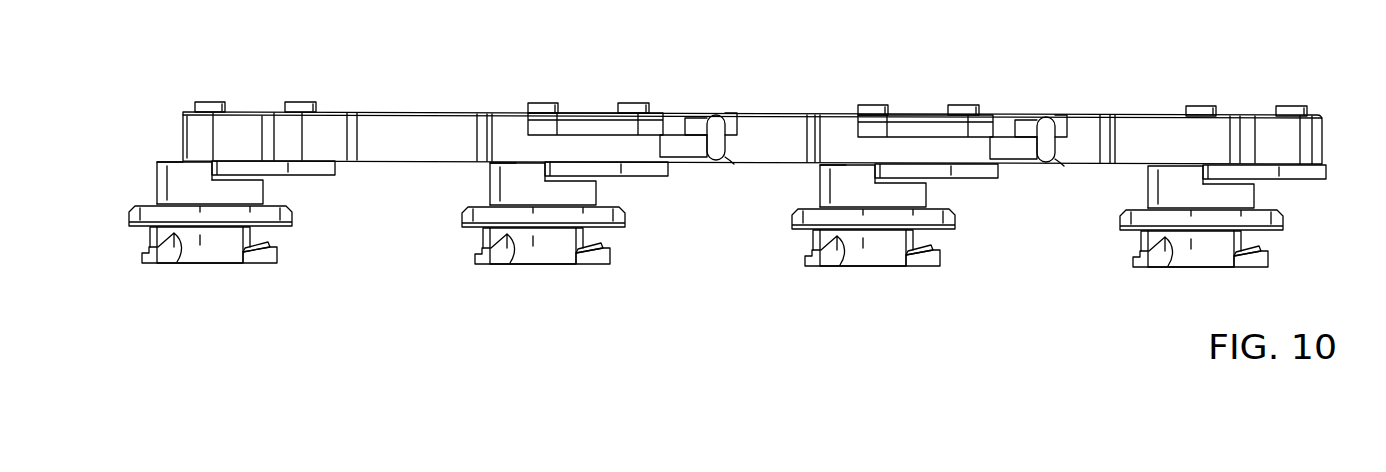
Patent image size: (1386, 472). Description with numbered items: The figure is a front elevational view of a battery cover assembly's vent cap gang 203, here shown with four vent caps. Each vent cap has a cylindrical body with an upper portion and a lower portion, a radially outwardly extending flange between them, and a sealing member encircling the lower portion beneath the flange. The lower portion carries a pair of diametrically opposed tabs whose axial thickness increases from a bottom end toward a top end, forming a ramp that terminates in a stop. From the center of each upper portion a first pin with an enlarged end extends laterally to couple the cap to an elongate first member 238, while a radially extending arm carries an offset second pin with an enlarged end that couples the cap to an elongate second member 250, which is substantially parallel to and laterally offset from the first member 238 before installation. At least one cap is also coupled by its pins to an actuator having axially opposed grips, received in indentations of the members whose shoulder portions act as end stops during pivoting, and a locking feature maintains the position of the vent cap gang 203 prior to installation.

The vent cap gang 203 is at (380, 102).
The first member 238 is at (262, 113).
The second member 250 is at (425, 113).